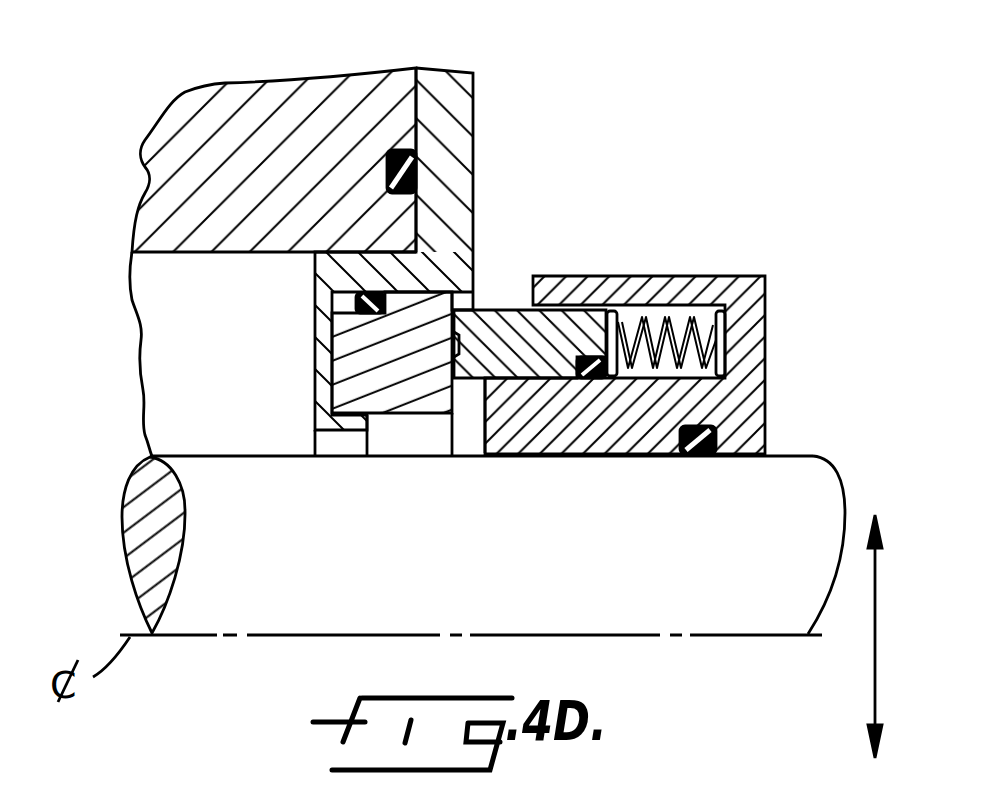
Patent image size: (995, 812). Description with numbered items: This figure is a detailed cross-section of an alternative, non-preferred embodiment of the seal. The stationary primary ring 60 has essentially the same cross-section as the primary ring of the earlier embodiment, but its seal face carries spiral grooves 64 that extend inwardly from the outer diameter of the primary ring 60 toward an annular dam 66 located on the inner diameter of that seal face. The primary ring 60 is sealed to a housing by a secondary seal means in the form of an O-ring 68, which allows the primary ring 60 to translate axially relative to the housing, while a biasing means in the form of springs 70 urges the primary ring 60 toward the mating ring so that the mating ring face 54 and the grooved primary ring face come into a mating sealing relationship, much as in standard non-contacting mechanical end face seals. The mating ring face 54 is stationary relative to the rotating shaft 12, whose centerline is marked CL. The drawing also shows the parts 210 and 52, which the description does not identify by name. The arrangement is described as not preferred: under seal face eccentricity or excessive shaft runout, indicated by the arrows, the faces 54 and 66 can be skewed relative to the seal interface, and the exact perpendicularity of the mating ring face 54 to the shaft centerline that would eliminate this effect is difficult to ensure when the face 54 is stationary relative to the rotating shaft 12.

The housing 210 is at (263, 95).
The shaft 12 is at (138, 523).
The primary sealing ring 52 is at (350, 371).
The mating ring face 54 is at (452, 395).
The primary ring 60 is at (567, 323).
The spiral grooves 64 is at (473, 310).
The annular dam 66 is at (452, 367).
The O-ring 68 is at (585, 368).
The springs 70 is at (703, 317).